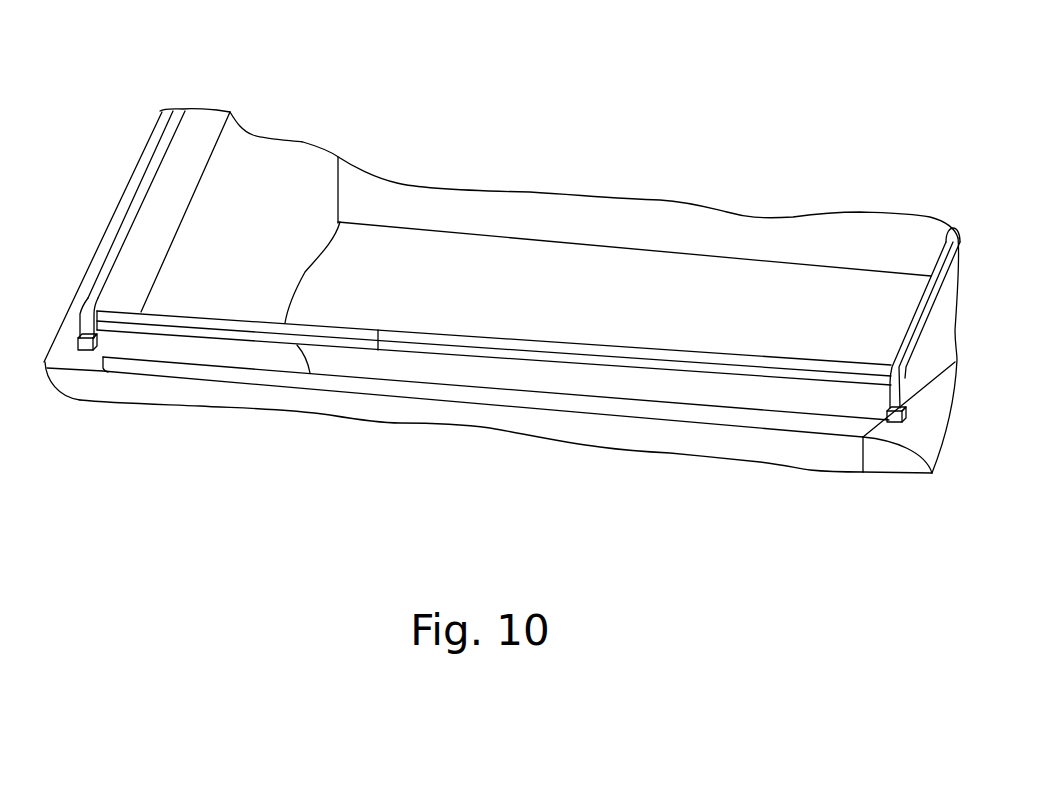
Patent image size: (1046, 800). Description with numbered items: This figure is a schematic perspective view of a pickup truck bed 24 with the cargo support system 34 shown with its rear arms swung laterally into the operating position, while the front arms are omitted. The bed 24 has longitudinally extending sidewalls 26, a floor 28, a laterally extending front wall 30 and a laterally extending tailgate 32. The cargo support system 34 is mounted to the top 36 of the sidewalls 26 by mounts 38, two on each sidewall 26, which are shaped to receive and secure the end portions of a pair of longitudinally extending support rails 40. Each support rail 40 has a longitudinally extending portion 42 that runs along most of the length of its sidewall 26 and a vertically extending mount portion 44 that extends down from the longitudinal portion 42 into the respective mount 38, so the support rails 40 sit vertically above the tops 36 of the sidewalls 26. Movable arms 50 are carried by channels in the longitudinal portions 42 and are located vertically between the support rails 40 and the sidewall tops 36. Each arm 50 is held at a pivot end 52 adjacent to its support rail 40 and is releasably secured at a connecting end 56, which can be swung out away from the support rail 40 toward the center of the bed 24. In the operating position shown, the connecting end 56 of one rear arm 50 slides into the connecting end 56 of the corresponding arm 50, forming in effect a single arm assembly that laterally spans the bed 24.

The bed 24 is at (537, 158).
The sidewalls 26 is at (273, 138).
The floor 28 is at (515, 286).
The front wall 30 is at (623, 236).
The tailgate 32 is at (487, 428).
The cargo support system 34 is at (120, 90).
The top 36 is at (209, 108).
The mounts 38 is at (893, 422).
The support rails 40 is at (162, 130).
The longitudinally extending portion 42 is at (942, 250).
The vertically extending mount portion 44 is at (78, 345).
The arms 50 is at (613, 367).
The pivot end 52 is at (103, 333).
The connecting end 56 is at (368, 350).